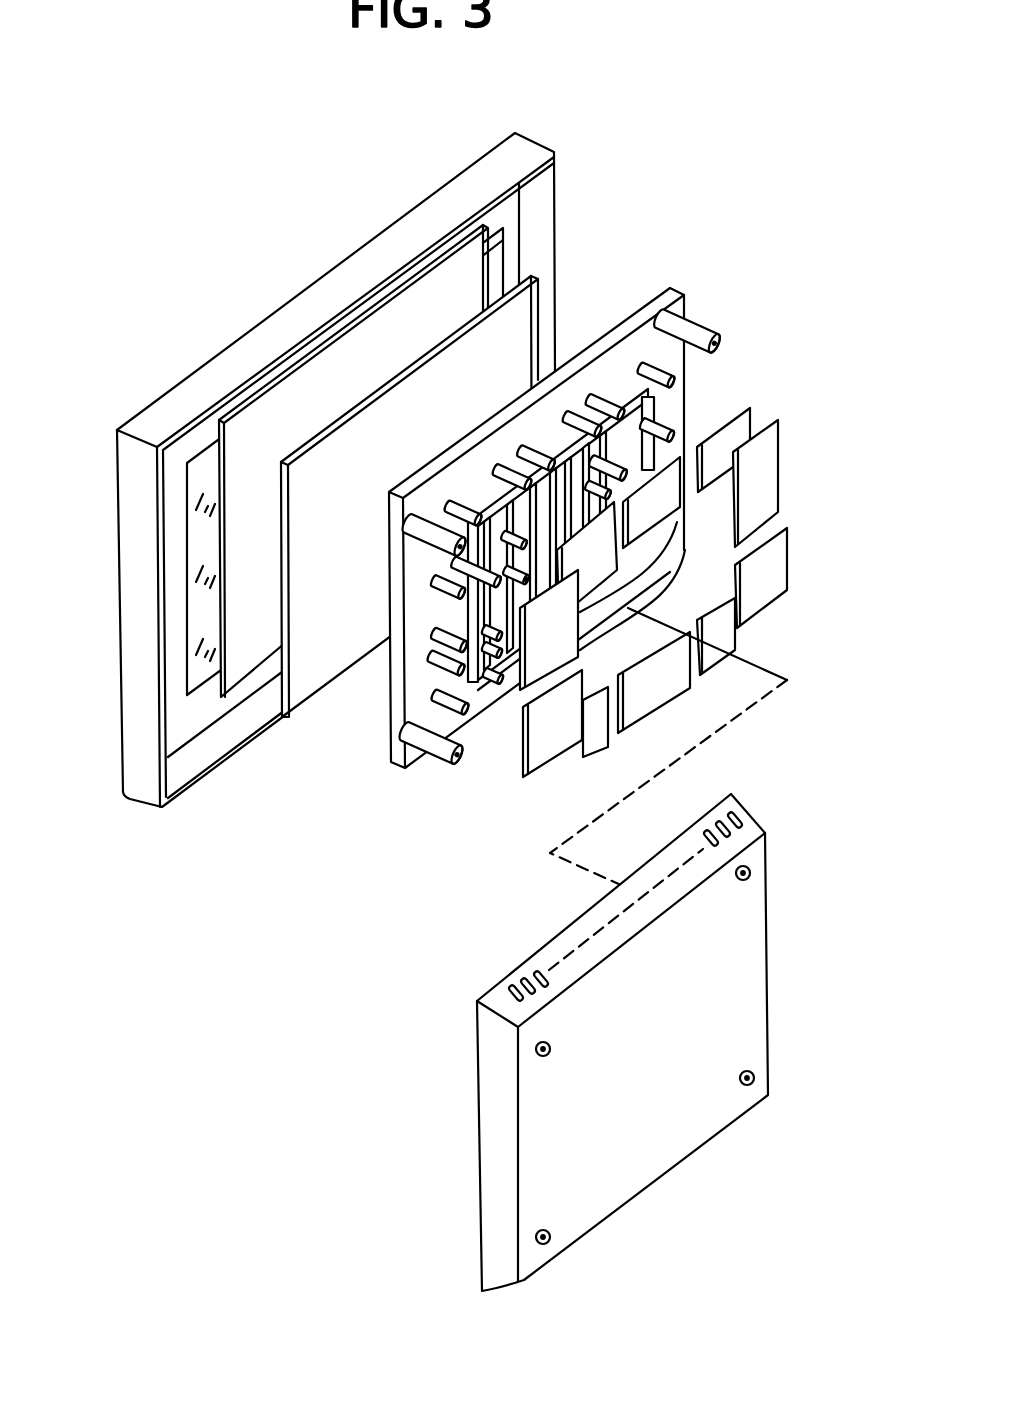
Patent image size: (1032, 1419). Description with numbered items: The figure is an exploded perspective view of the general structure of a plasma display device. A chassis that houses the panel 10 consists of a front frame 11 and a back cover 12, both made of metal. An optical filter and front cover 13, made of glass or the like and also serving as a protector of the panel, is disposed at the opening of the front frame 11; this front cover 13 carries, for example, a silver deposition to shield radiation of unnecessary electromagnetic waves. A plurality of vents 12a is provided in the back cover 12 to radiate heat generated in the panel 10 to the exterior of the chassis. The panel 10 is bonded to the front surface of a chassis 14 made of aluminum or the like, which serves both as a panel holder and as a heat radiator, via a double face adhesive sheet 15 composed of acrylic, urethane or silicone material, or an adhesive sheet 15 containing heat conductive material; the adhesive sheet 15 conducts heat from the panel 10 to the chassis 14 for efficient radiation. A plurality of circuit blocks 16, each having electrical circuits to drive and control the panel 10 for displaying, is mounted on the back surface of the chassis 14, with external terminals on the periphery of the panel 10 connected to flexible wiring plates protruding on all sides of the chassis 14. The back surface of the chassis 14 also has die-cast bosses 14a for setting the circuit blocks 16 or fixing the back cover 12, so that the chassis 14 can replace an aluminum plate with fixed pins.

The panel 10 is at (257, 660).
The front frame 11 is at (143, 788).
The back cover 12 is at (487, 1123).
The vents 12a is at (507, 1010).
The optical filter and front cover 13 is at (193, 612).
The chassis 14 is at (403, 758).
The bosses 14a is at (668, 295).
The adhesive sheet 15 is at (313, 688).
The circuit blocks 16 is at (608, 747).